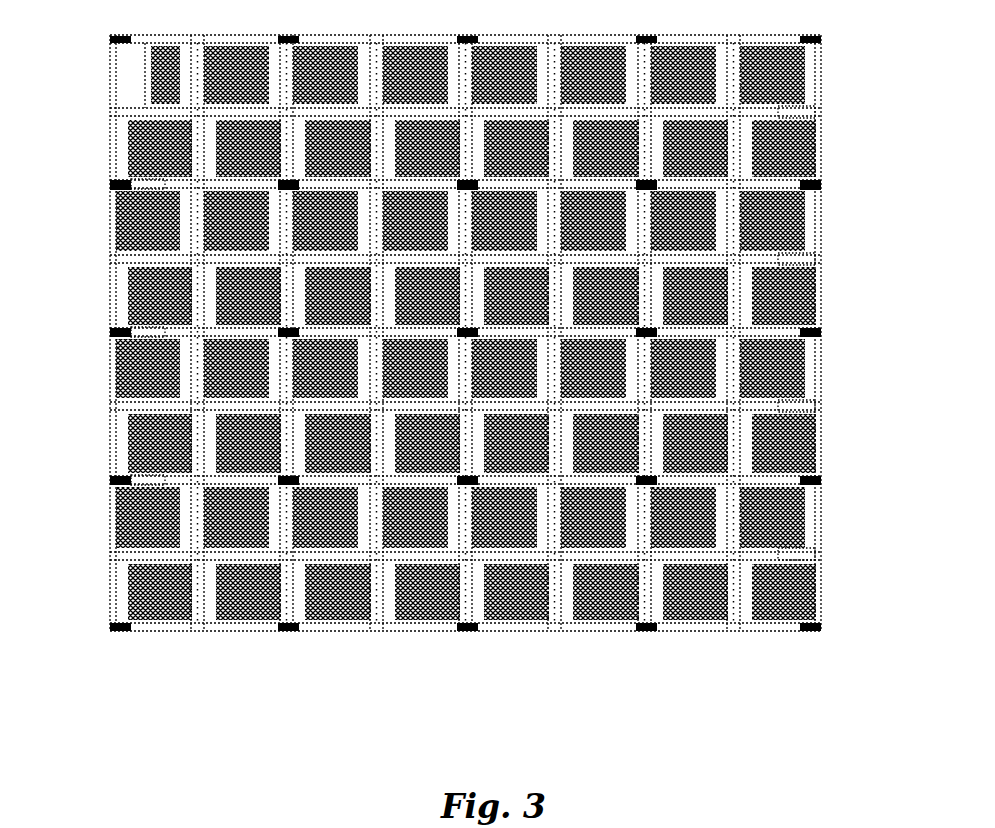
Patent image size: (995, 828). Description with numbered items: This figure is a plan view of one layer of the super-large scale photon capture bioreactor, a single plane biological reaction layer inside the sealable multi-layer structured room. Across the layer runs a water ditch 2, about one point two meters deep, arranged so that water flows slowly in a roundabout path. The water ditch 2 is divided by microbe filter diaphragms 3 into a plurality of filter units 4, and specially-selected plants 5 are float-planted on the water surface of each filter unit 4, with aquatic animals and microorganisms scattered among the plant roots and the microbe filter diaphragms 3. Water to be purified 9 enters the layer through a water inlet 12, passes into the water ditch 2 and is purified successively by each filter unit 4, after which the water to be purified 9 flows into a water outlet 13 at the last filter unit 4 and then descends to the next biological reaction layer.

The water ditch 2 is at (760, 250).
The microbe filter diaphragm 3 is at (725, 153).
The filter unit 4 is at (712, 217).
The specially-selected plants 5 is at (797, 353).
The water to be purified 9 is at (797, 60).
The water inlet 12 is at (105, 583).
The water outlet 13 is at (143, 67).